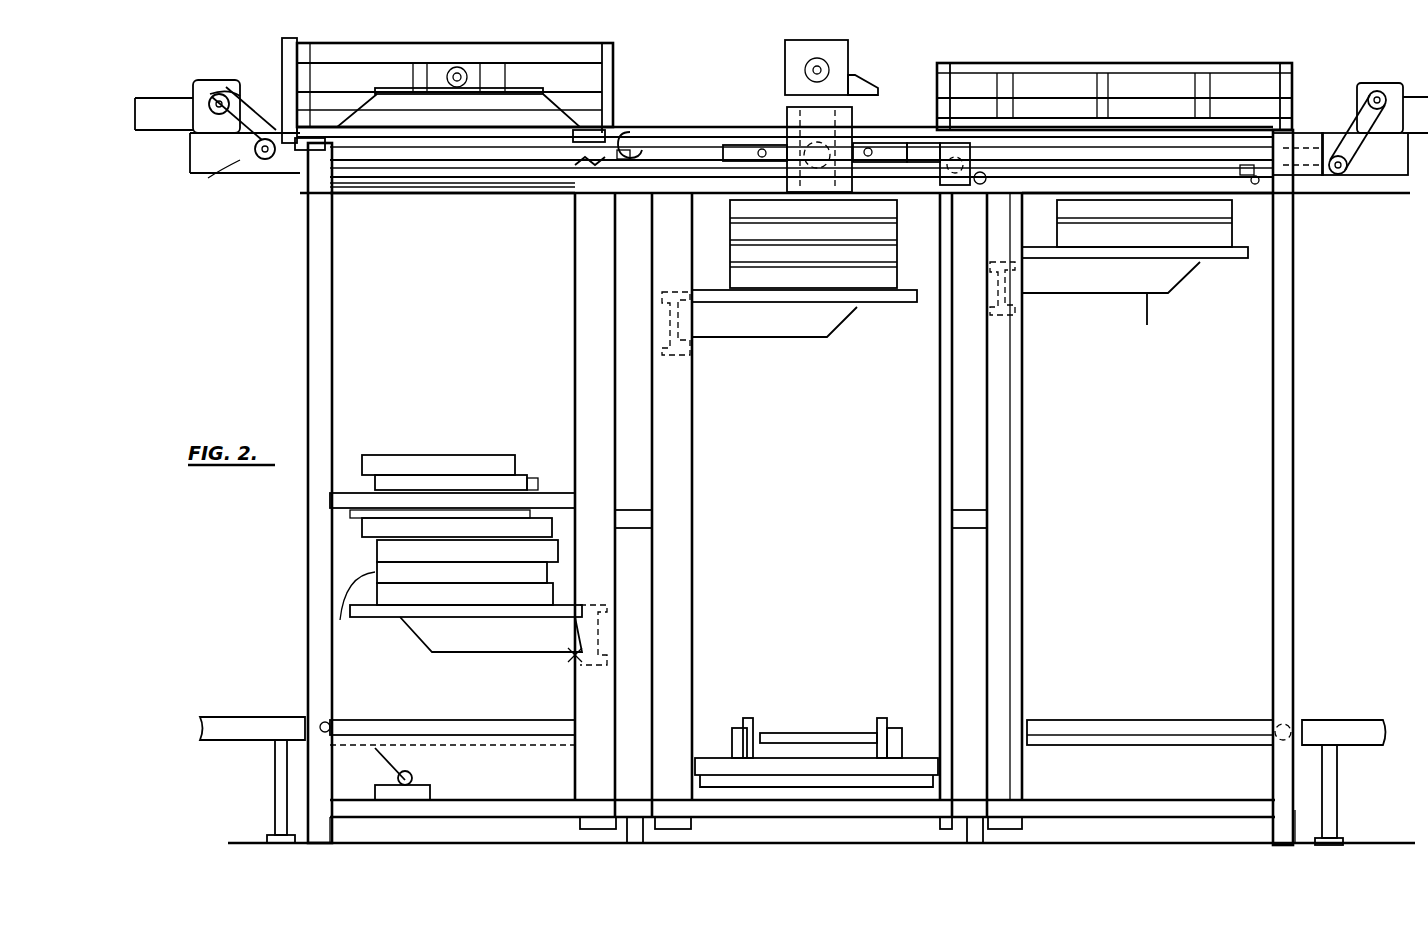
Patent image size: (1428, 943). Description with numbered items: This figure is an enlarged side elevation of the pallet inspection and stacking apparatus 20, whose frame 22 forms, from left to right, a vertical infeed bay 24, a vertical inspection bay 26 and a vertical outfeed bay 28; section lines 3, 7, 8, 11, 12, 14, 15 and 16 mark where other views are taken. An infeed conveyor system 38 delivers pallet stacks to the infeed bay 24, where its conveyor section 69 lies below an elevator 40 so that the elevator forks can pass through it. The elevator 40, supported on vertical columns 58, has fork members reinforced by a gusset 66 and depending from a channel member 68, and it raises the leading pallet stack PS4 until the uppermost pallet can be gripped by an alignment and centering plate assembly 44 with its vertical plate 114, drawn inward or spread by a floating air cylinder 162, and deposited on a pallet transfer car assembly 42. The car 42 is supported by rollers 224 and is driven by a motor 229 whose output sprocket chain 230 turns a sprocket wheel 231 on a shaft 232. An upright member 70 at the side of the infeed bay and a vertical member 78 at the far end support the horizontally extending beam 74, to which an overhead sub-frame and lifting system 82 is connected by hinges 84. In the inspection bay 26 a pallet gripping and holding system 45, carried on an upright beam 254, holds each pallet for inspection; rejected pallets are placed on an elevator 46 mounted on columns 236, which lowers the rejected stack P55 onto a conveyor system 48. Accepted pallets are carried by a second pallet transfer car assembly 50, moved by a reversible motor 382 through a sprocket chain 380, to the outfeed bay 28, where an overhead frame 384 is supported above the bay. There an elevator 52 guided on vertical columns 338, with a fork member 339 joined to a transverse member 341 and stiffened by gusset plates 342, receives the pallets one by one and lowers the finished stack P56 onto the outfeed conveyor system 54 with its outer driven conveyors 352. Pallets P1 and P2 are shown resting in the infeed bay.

The pallet inspection and stacking apparatus 20 is at (1330, 525).
The frame 22 is at (308, 342).
The vertical infeed bay 24 is at (356, 360).
The vertical inspection bay 26 is at (710, 848).
The vertical outfeed bay 28 is at (1306, 449).
The infeed conveyor system 38 is at (226, 716).
The elevator 40 is at (413, 644).
The pallet transfer car assembly 42 is at (518, 188).
The alignment and centering plate assembly 44 is at (372, 106).
The pallet gripping and holding system 45 is at (782, 58).
The elevator 46 is at (782, 338).
The conveyor system 48 is at (732, 722).
The pallet transfer car assembly 50 is at (1222, 170).
The elevator 52 is at (1064, 320).
The outfeed conveyor system 54 is at (1358, 714).
The vertical columns 58 is at (573, 365).
The gusset 66 is at (462, 655).
The channel member 68 is at (572, 665).
The conveyor section 69 is at (472, 760).
The upright member 70 is at (307, 301).
The beam 74 is at (378, 196).
The vertical member 78 is at (1293, 362).
The overhead sub-frame and lifting system 82 is at (578, 42).
The hinges 84 is at (312, 165).
The vertical plate 114 is at (548, 105).
The air cylinder 162 is at (468, 66).
The rollers 224 is at (588, 200).
The motor 229 is at (210, 78).
The output sprocket chain 230 is at (240, 162).
The sprocket wheel 231 is at (262, 98).
The shaft 232 is at (270, 168).
The columns 236 is at (690, 447).
The upright beam 254 is at (850, 62).
The vertical columns 338 is at (1022, 546).
The fork member 339 is at (1230, 258).
The transverse member 341 is at (1005, 290).
The gusset plates 342 is at (1172, 280).
The outer driven conveyors 352 is at (1142, 715).
The sprocket chain 380 is at (1352, 165).
The reversible motor 382 is at (1390, 82).
The overhead frame 384 is at (1272, 62).
The pallet 1 P1 is at (398, 455).
The pallet 2 P2 is at (450, 470).
The pallet stack PS4 is at (448, 578).
The pallet stack P55 is at (727, 279).
The pallet stack P56 is at (1238, 233).
The section line 3 is at (457, 10).
The section line 7 is at (710, 58).
The section line 8 is at (917, 78).
The section line 11 is at (1170, 40).
The section line 12 is at (1172, 40).
The section line 14 is at (632, 692).
The section line 15 is at (918, 710).
The section line 16 is at (1053, 700).